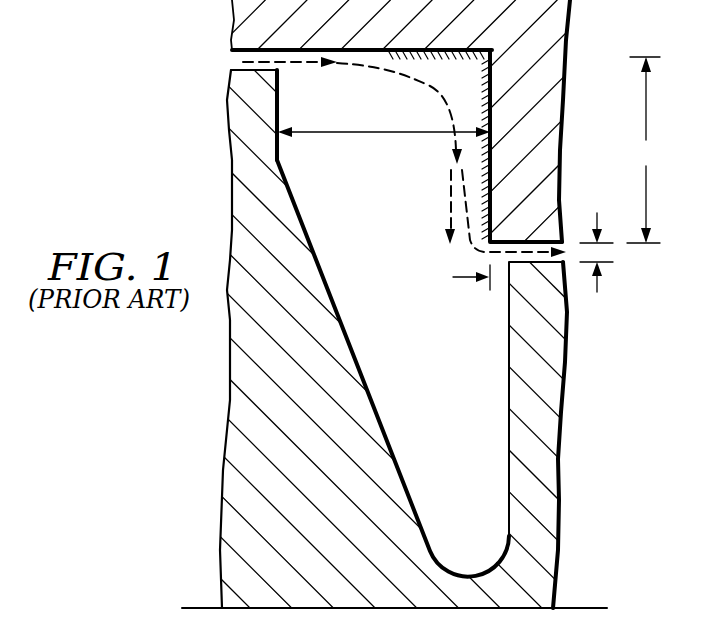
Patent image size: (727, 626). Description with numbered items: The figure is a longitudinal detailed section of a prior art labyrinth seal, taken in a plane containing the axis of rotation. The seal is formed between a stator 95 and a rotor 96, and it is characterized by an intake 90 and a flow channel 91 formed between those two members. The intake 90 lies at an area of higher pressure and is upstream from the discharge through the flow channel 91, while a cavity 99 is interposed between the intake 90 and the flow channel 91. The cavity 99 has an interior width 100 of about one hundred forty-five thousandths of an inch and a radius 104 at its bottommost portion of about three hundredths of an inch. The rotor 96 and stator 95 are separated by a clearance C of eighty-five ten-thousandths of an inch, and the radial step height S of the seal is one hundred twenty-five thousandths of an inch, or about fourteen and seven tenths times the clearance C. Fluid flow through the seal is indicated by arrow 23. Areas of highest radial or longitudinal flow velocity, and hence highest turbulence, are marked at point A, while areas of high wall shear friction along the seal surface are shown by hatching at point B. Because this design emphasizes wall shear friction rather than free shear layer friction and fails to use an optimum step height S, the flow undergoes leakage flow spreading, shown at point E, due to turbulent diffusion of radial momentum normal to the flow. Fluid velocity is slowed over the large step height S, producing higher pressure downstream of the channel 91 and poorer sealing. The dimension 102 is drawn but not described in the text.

The intake 90 is at (238, 61).
The stator 95 is at (567, 20).
The rotor 96 is at (560, 515).
The flow channel 91 is at (541, 265).
The cavity 99 is at (395, 257).
The interior width 100 is at (337, 134).
The gap width 102 is at (491, 292).
The radius 104 is at (469, 566).
The arrow 23 is at (405, 79).
The point A is at (359, 68).
The point B is at (457, 60).
The point E is at (450, 204).
The step height S is at (643, 150).
The clearance C is at (596, 266).